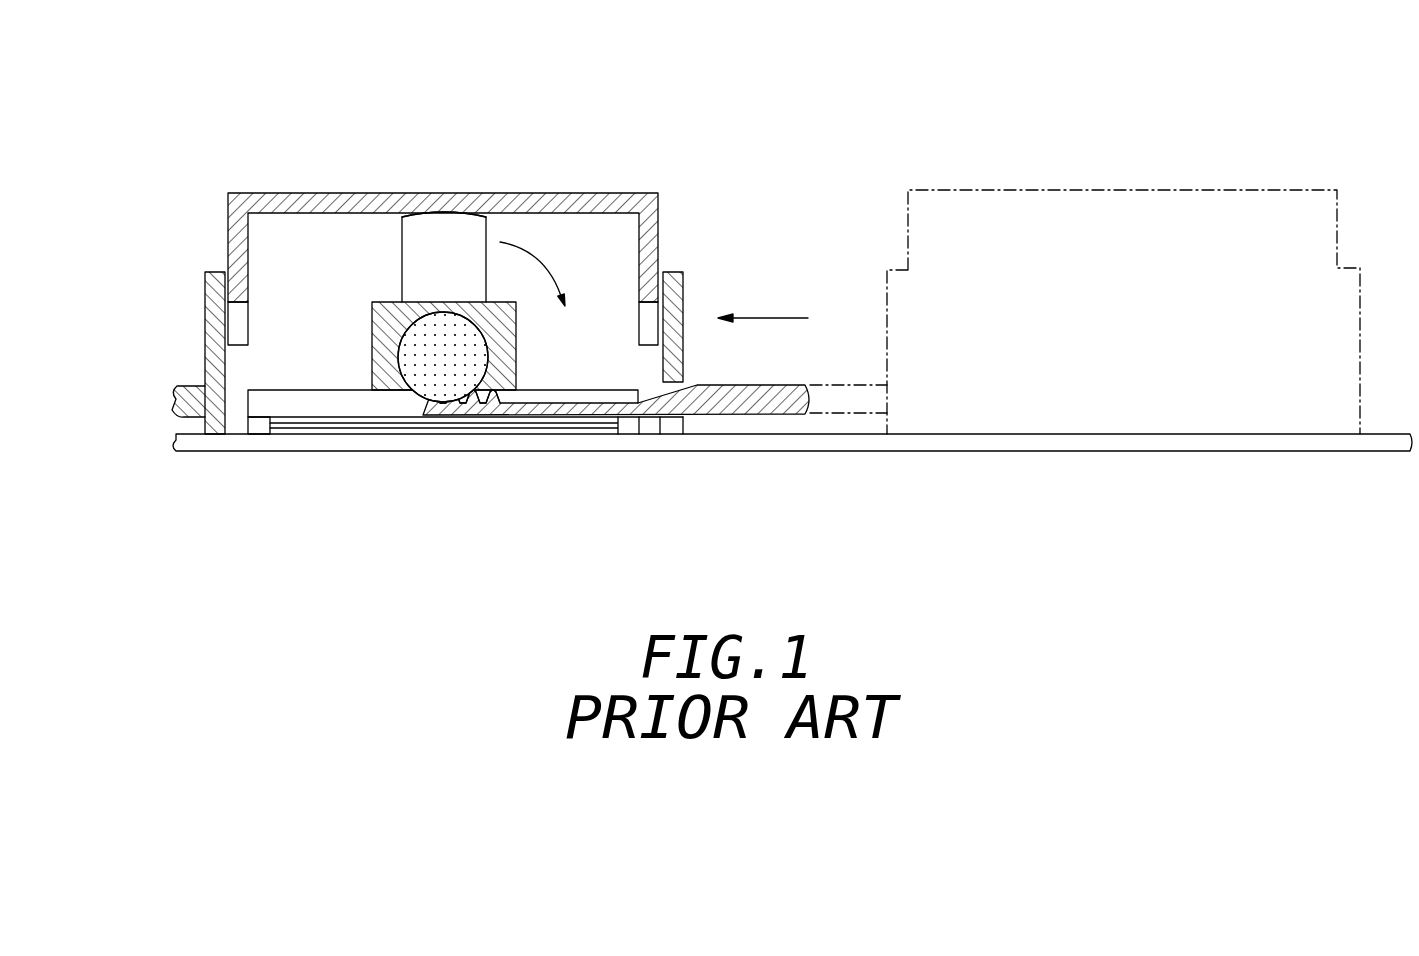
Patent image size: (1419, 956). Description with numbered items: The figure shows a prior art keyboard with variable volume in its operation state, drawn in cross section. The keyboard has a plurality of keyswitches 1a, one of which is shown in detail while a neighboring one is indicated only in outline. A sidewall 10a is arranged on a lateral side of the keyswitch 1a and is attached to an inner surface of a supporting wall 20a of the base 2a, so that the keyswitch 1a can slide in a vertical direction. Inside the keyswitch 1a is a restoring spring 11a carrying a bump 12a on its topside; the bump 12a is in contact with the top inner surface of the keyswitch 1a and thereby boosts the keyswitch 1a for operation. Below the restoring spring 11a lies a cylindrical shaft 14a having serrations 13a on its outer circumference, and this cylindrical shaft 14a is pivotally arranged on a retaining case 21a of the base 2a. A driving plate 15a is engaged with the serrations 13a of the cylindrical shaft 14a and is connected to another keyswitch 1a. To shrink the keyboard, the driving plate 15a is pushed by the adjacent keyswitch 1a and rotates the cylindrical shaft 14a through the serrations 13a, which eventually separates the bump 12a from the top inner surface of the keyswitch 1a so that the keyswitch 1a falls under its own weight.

The keyswitch 1a is at (717, 260).
The base 2a is at (757, 451).
The sidewall 10a is at (233, 252).
The restoring spring 11a is at (433, 233).
The bump 12a is at (443, 212).
The serrations 13a is at (437, 400).
The cylindrical shaft 14a is at (468, 355).
The driving plate 15a is at (512, 403).
The supporting wall 20a is at (215, 323).
The retaining case 21a is at (517, 337).